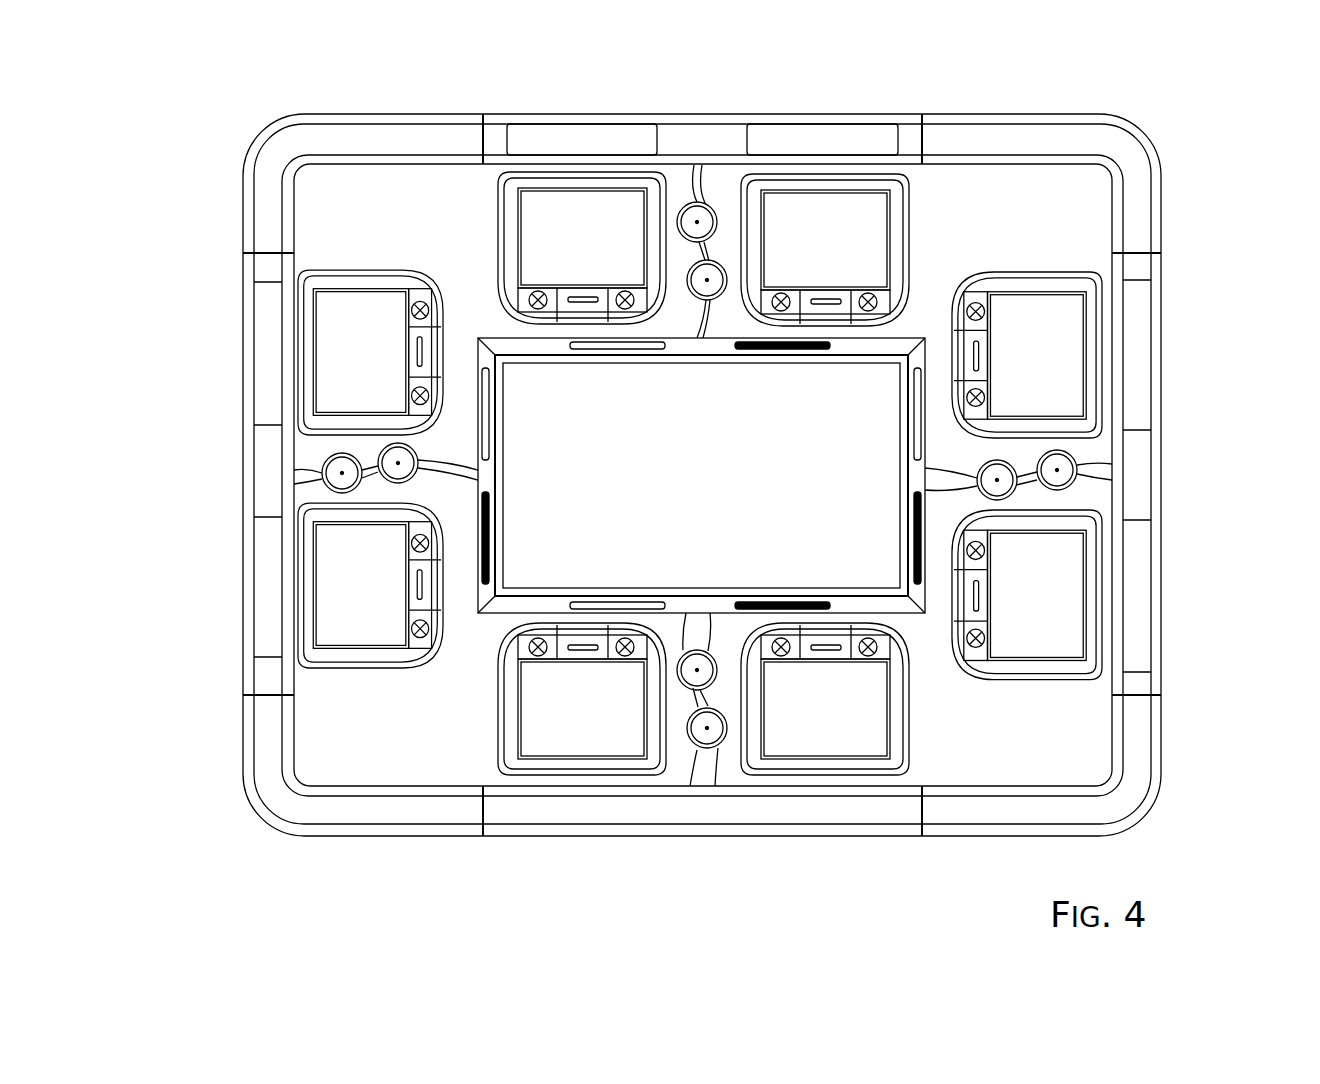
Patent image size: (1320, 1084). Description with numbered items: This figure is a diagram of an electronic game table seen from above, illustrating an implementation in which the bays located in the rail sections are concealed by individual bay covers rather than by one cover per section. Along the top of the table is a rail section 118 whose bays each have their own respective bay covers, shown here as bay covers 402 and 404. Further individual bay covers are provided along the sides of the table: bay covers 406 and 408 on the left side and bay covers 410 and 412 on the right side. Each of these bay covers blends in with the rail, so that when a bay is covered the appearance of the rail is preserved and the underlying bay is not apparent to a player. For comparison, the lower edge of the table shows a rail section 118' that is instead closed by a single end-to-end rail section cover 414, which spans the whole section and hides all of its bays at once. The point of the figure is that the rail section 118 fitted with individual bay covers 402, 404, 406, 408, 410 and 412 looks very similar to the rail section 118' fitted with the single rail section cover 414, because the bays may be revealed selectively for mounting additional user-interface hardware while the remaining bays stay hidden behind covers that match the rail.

The rail section 118 is at (702, 111).
The rail section 118' is at (702, 848).
The bay cover 402 is at (565, 150).
The bay cover 404 is at (800, 150).
The bay cover 406 is at (268, 350).
The bay cover 408 is at (268, 582).
The bay cover 410 is at (1132, 353).
The bay cover 412 is at (1132, 590).
The rail section cover 414 is at (685, 817).